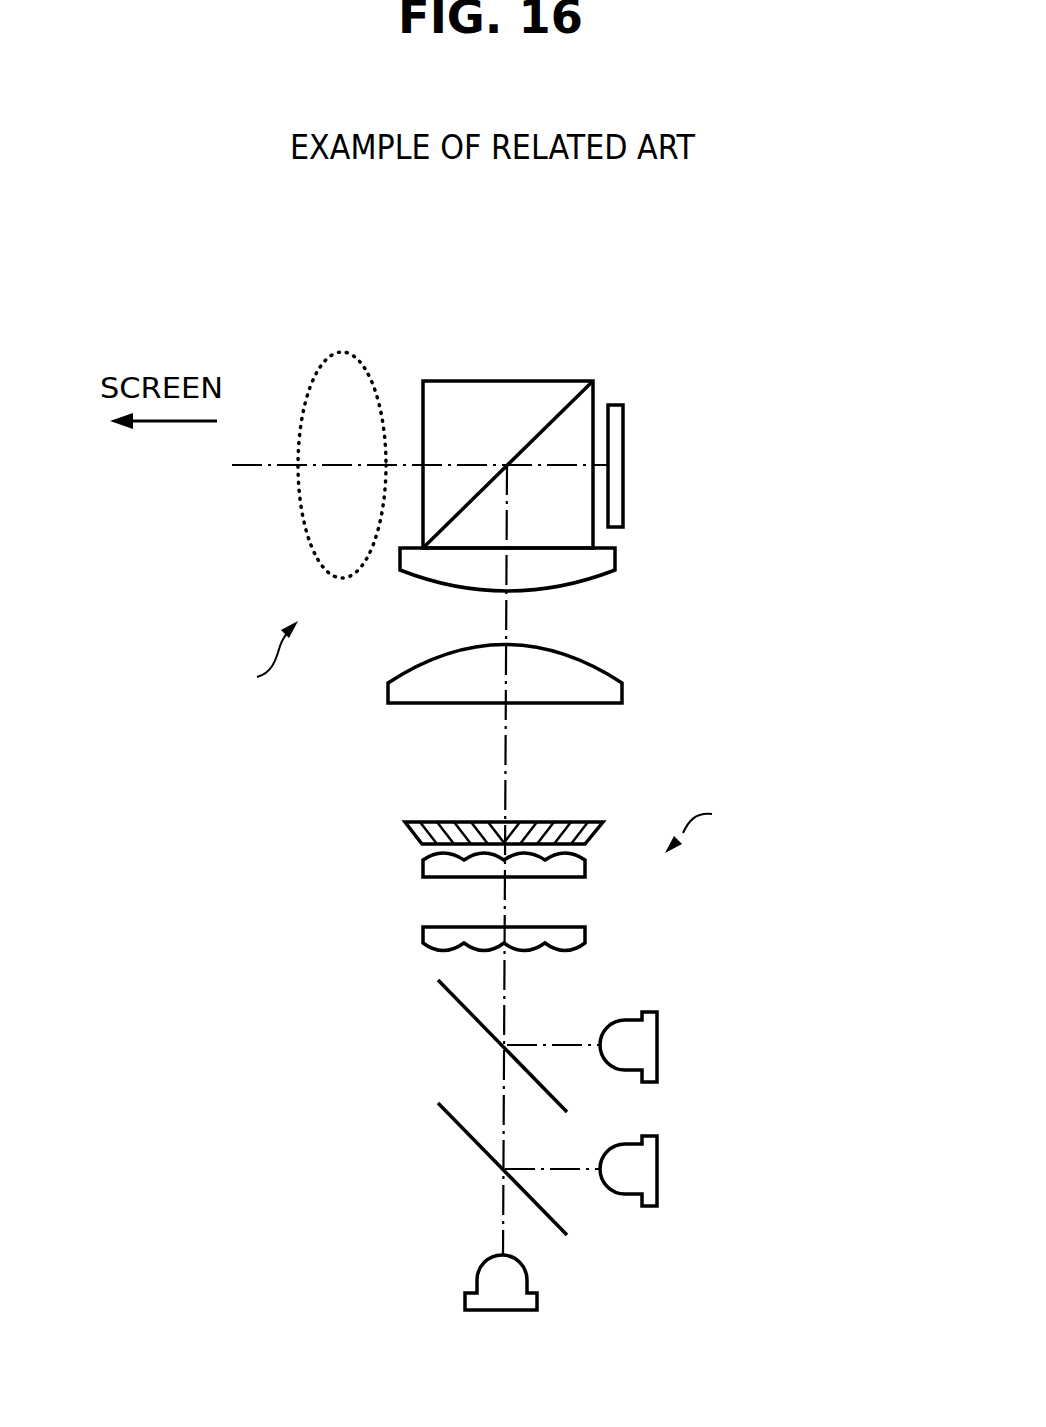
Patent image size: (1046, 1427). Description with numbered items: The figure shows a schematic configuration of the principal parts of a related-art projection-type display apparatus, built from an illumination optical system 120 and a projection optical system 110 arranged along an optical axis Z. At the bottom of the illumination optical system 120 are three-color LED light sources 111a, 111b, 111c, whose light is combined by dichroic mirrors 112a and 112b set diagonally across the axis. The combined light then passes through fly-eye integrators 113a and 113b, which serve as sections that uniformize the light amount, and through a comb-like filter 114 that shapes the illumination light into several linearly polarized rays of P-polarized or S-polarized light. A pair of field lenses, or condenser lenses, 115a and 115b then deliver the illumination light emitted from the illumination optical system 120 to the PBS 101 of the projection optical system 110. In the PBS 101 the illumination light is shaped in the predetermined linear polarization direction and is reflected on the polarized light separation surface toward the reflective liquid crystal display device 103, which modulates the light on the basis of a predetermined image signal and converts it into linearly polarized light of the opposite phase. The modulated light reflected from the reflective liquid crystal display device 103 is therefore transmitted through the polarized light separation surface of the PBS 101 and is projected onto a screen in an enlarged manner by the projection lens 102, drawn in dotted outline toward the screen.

The PBS 101 is at (473, 388).
The projection lens 102 is at (343, 350).
The reflective liquid crystal display device 103 is at (618, 402).
The projection optical system 110 is at (247, 670).
The LED light source 111a is at (537, 1310).
The LED light source 111b is at (657, 1170).
The LED light source 111c is at (657, 1060).
The dichroic mirror 112a is at (440, 1118).
The dichroic mirror 112b is at (458, 1003).
The fly-eye integrator 113a is at (423, 945).
The fly-eye integrator 113b is at (423, 877).
The comb-like filter 114 is at (405, 830).
The field lens 115a is at (622, 683).
The field lens 115b is at (615, 560).
The illumination optical system 120 is at (717, 823).
The optical axis Z is at (505, 758).